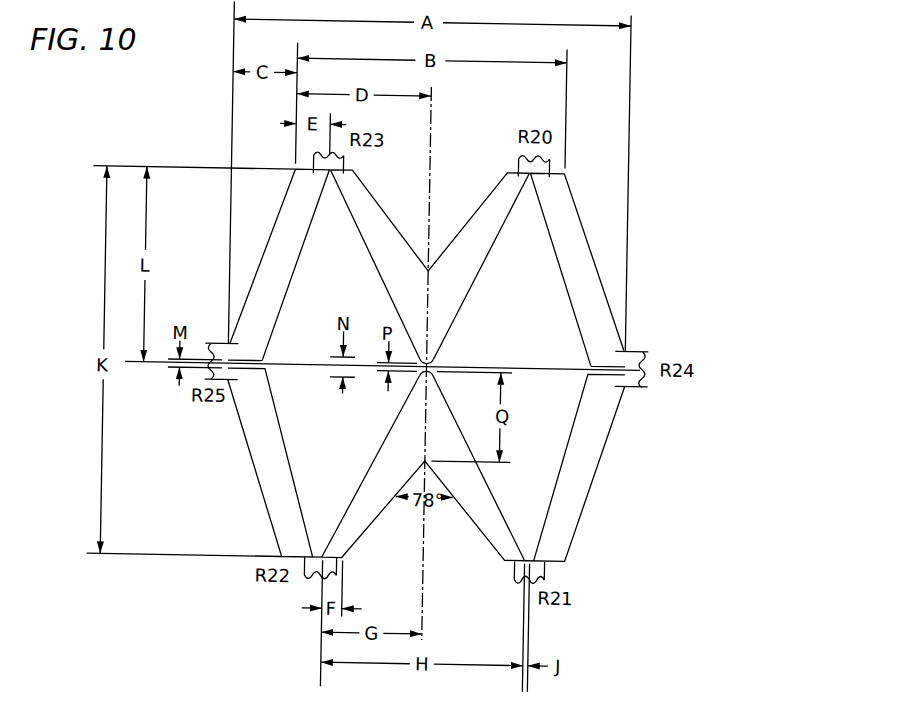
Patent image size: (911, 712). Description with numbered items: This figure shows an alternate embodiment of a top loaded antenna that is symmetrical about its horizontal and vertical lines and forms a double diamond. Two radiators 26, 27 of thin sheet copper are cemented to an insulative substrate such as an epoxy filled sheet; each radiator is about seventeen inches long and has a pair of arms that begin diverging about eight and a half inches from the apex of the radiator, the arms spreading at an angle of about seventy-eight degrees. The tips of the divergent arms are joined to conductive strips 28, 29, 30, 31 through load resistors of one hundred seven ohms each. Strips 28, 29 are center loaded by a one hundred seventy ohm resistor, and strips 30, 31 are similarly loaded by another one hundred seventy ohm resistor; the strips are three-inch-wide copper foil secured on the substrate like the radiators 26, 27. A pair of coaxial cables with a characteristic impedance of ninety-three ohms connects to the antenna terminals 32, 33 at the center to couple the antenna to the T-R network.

The radiator 26 is at (452, 412).
The radiator 27 is at (467, 290).
The conductive strip 28 is at (576, 213).
The conductive strip 29 is at (595, 474).
The conductive strip 30 is at (257, 472).
The conductive strip 31 is at (271, 229).
The antenna terminal 32 is at (427, 357).
The antenna terminal 33 is at (432, 376).